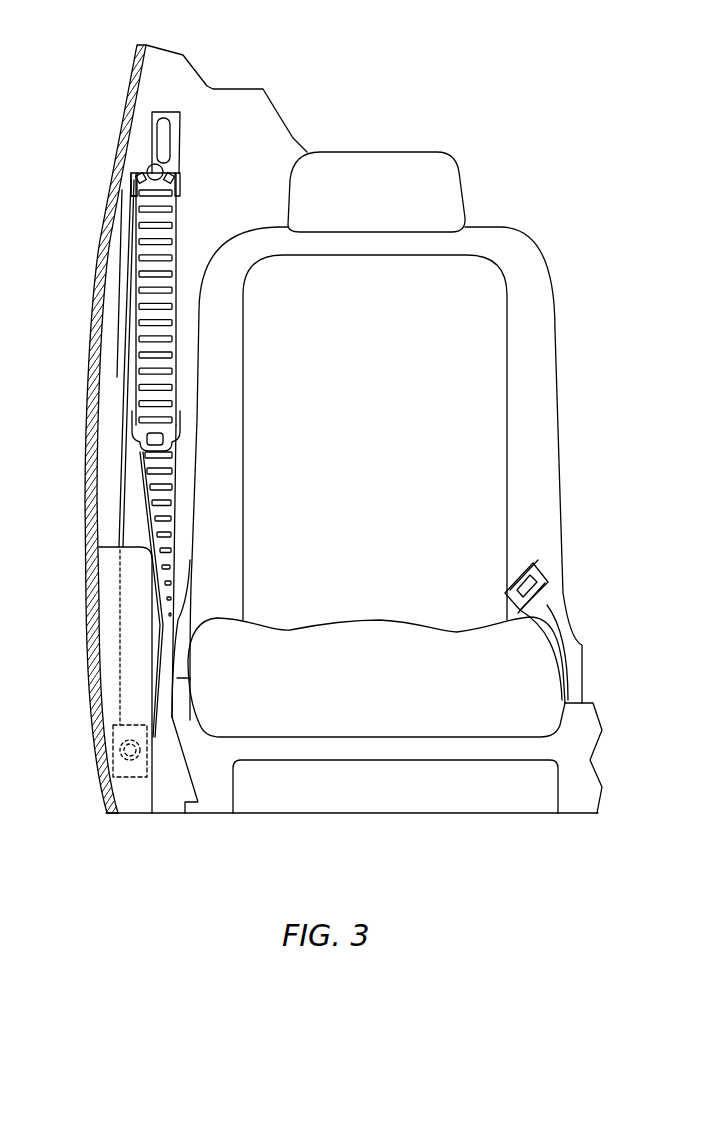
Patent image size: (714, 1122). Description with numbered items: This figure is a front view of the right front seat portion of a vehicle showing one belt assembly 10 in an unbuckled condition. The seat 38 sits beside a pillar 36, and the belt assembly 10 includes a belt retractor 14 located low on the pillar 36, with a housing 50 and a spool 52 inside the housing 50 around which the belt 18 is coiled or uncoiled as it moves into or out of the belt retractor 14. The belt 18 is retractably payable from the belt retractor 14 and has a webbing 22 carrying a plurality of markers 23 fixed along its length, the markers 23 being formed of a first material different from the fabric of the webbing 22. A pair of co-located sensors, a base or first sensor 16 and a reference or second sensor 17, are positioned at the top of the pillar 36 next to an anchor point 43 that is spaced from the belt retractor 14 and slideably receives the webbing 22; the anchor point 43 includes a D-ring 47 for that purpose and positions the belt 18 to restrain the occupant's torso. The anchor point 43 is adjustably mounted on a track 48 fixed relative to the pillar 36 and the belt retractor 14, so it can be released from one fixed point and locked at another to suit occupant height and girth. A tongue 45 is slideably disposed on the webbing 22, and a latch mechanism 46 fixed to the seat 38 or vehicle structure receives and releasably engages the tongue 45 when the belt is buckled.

The belt assembly 10 is at (40, 380).
The belt retractor 14 is at (111, 748).
The first sensor 16 is at (138, 170).
The second sensor 17 is at (165, 168).
The belt 18 is at (177, 211).
The webbing 22 is at (120, 480).
The markers 23 is at (167, 362).
The pillar 36 is at (163, 46).
The seat 38 is at (557, 462).
The anchor point 43 is at (150, 160).
The tongue 45 is at (181, 420).
The latch mechanism 46 is at (544, 574).
The D-ring 47 is at (127, 181).
The track 48 is at (182, 128).
The housing 50 is at (113, 726).
The spool 52 is at (131, 740).